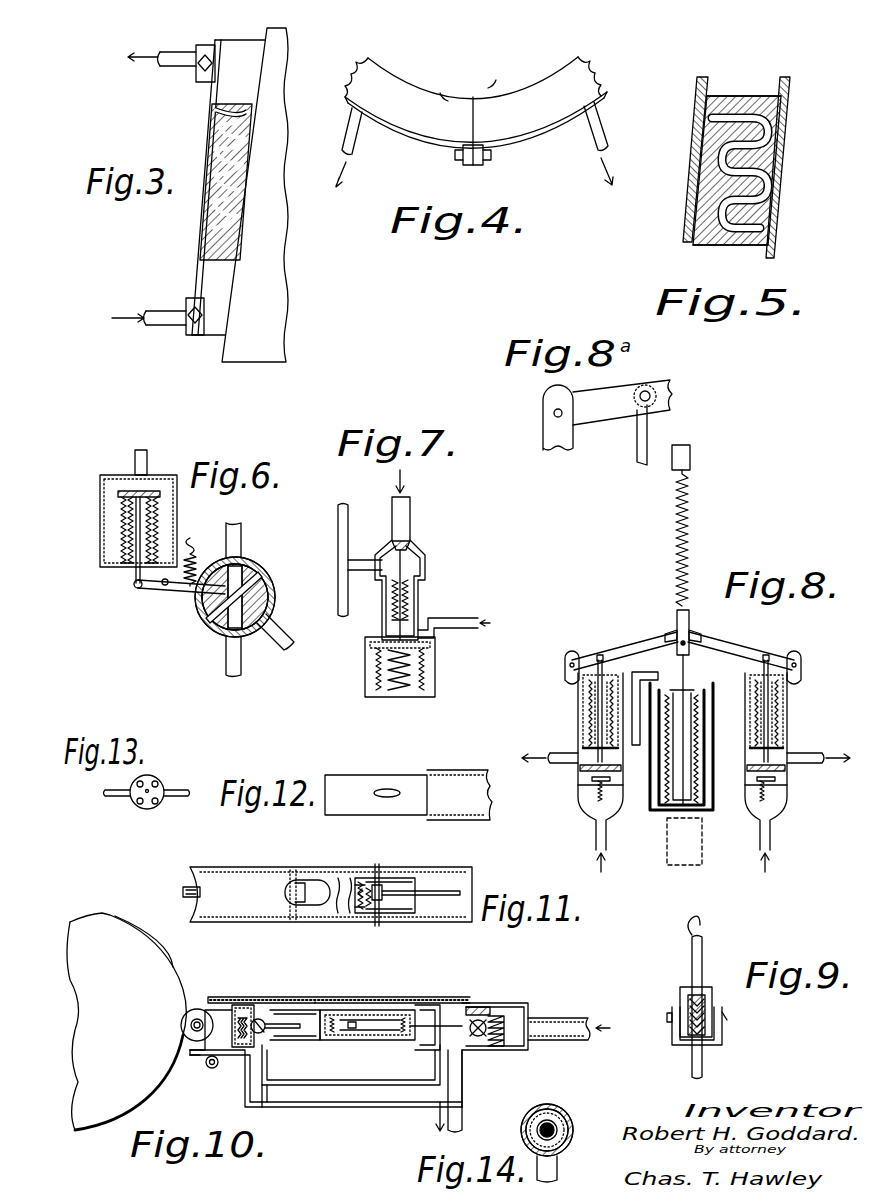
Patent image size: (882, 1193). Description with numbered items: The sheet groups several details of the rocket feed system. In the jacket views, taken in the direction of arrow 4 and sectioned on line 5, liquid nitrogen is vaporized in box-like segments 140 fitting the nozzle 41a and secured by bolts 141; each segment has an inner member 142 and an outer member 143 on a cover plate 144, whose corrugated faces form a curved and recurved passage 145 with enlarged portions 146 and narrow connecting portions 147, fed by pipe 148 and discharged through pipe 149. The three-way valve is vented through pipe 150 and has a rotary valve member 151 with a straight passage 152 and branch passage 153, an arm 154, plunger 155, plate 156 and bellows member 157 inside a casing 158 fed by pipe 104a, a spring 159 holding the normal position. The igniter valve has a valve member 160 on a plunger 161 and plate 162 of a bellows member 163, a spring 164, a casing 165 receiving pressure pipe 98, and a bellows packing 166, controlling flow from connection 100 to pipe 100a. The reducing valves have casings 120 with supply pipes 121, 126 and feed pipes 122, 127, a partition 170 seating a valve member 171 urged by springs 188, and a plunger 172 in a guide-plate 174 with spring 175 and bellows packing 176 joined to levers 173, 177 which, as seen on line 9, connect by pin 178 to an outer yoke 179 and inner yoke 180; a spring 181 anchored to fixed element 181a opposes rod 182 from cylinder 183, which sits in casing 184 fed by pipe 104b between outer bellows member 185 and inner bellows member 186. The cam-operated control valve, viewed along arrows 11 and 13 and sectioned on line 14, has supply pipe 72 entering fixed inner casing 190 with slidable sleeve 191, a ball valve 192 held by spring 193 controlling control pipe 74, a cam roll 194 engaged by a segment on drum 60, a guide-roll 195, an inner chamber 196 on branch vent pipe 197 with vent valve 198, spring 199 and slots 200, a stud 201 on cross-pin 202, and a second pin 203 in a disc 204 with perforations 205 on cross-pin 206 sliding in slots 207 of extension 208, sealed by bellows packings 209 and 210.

In FIG. 3, the arrow 4 is at (224, 5).
In FIG. 4, the section line 5 is at (508, 82).
In FIG. 8, the section line 9 is at (690, 605).
In FIG. 10, the arrow 11 is at (392, 968).
In FIG. 6, the arrow 13 is at (88, 496).
In FIG. 11, the arrow 13 is at (351, 895).
In FIG. 10, the section line 14 is at (480, 993).
In FIG. 3, the nozzle 41a is at (281, 292).
In FIG. 10, the drum 60 is at (126, 1021).
In FIG. 6, the pressure supply pipe 72 is at (244, 532).
In FIG. 10, the pressure supply pipe 72 is at (569, 1016).
In FIG. 10, the control pipe 74 is at (447, 1126).
In FIG. 14, the control pipe 74 is at (558, 1172).
In FIG. 7, the pressure pipe 98 is at (454, 617).
In FIG. 7, the supply pipe or hose connection 100 is at (407, 504).
In FIG. 7, the pipe 100a is at (330, 514).
In FIG. 6, the pipe 104a is at (135, 458).
In FIG. 8, the pressure pipe 104b is at (636, 680).
In FIG. 8, the casing 120 is at (578, 789).
In FIG. 8, the gasoline supply pipe 121 is at (595, 836).
In FIG. 8, the gasoline generator connection 122 is at (550, 748).
In FIG. 8, the oxygen supply pipe 126 is at (772, 836).
In FIG. 8, the oxygen generator feed pipe 127 is at (818, 748).
In FIG. 3, the box-like segments 140 is at (255, 60).
In FIG. 4, the box-like segments 140 is at (445, 95).
In FIG. 4, the bolts 141 is at (461, 155).
In FIG. 3, the inner member 142 is at (236, 212).
In FIG. 5, the inner member 142 is at (765, 224).
In FIG. 3, the outer member 143 is at (208, 220).
In FIG. 5, the outer member 143 is at (697, 210).
In FIG. 3, the cover plate 144 is at (198, 270).
In FIG. 5, the cover plate 144 is at (690, 230).
In FIG. 3, the curved and recurved passage 145 is at (240, 128).
In FIG. 5, the curved and recurved passage 145 is at (775, 165).
In FIG. 3, the enlarged portions 146 is at (214, 125).
In FIG. 5, the enlarged portions 146 is at (712, 172).
In FIG. 3, the narrow connecting portions 147 is at (232, 248).
In FIG. 5, the narrow connecting portions 147 is at (767, 118).
In FIG. 3, the pipe 148 is at (163, 330).
In FIG. 3, the pipe 149 is at (172, 64).
In FIG. 4, the pipe 149 is at (356, 118).
In FIG. 6, the pipe 150 is at (283, 652).
In FIG. 6, the rotary valve member 151 is at (236, 577).
In FIG. 6, the straight passage 152 is at (256, 578).
In FIG. 6, the branch passage 153 is at (208, 620).
In FIG. 6, the arm 154 is at (158, 592).
In FIG. 6, the plunger 155 is at (130, 526).
In FIG. 6, the plate 156 is at (143, 491).
In FIG. 6, the bellows member 157 is at (130, 548).
In FIG. 6, the casing 158 is at (89, 580).
In FIG. 6, the spring 159 is at (202, 551).
In FIG. 7, the valve member 160 is at (395, 546).
In FIG. 7, the plunger 161 is at (404, 564).
In FIG. 7, the plate 162 is at (436, 643).
In FIG. 7, the bellows member 163 is at (428, 668).
In FIG. 7, the spring 164 is at (412, 685).
In FIG. 7, the casing 165 is at (366, 658).
In FIG. 7, the bellows packing 166 is at (392, 598).
In FIG. 8, the partition 170 is at (580, 769).
In FIG. 8, the valve member 171 is at (612, 780).
In FIG. 8A, the plunger 172 is at (637, 437).
In FIG. 8, the plunger 172 is at (602, 672).
In FIG. 8A, the lever 173 is at (672, 388).
In FIG. 8, the lever 173 is at (582, 662).
In FIG. 9, the lever 173 is at (688, 1000).
In FIG. 8, the movable guide-plate 174 is at (620, 757).
In FIG. 8, the spring 175 is at (585, 696).
In FIG. 8, the bellows packing 176 is at (590, 716).
In FIG. 8, the lever 177 is at (750, 660).
In FIG. 9, the lever 177 is at (712, 1000).
In FIG. 8, the pin 178 is at (679, 655).
In FIG. 9, the pin 178 is at (723, 1016).
In FIG. 9, the outer yoke 179 is at (712, 1045).
In FIG. 8, the inner yoke 180 is at (679, 618).
In FIG. 9, the inner yoke 180 is at (692, 965).
In FIG. 8, the spring 181 is at (688, 514).
In FIG. 9, the spring 181 is at (690, 928).
In FIG. 8, the fixed element 181a is at (690, 459).
In FIG. 8, the rod 182 is at (690, 672).
In FIG. 8, the cylinder 183 is at (694, 812).
In FIG. 8, the casing 184 is at (709, 758).
In FIG. 8, the larger outer bellows member 185 is at (700, 728).
In FIG. 8, the smaller inner bellows member 186 is at (706, 692).
In FIG. 8, the springs 188 is at (604, 800).
In FIG. 12, the fixed inner casing 190 is at (474, 772).
In FIG. 10, the fixed inner casing 190 is at (525, 1050).
In FIG. 14, the fixed inner casing 190 is at (528, 1128).
In FIG. 11, the outer casing or sleeve 191 is at (236, 867).
In FIG. 10, the outer casing or sleeve 191 is at (348, 1002).
In FIG. 14, the outer casing or sleeve 191 is at (566, 1115).
In FIG. 10, the ball valve 192 is at (472, 1032).
In FIG. 14, the ball valve 192 is at (558, 1128).
In FIG. 10, the spring 193 is at (518, 1010).
In FIG. 11, the cam roll 194 is at (184, 892).
In FIG. 10, the cam roll 194 is at (182, 1030).
In FIG. 10, the fixed guide-roll 195 is at (212, 1068).
In FIG. 10, the inner chamber 196 is at (237, 1008).
In FIG. 10, the branch vent pipe 197 is at (322, 1107).
In FIG. 10, the ball valve 198 is at (255, 1022).
In FIG. 10, the spring 199 is at (258, 1020).
In FIG. 11, the slots 200 is at (320, 905).
In FIG. 10, the slots 200 is at (286, 1028).
In FIG. 11, the stud 201 is at (278, 896).
In FIG. 10, the stud 201 is at (303, 1025).
In FIG. 11, the cross-pin 202 is at (310, 880).
In FIG. 10, the cross-pin 202 is at (290, 1052).
In FIG. 13, the second pin 203 is at (150, 777).
In FIG. 11, the second pin 203 is at (442, 882).
In FIG. 10, the second pin 203 is at (450, 1008).
In FIG. 13, the disc 204 is at (136, 805).
In FIG. 11, the disc 204 is at (374, 915).
In FIG. 10, the disc 204 is at (375, 1043).
In FIG. 13, the perforations 205 is at (152, 808).
In FIG. 13, the cross-pin 206 is at (106, 792).
In FIG. 12, the cross-pin 206 is at (382, 790).
In FIG. 11, the cross-pin 206 is at (377, 864).
In FIG. 10, the cross-pin 206 is at (358, 1027).
In FIG. 12, the slots 207 is at (395, 790).
In FIG. 11, the slots 207 is at (392, 876).
In FIG. 12, the reduced extension 208 is at (354, 805).
In FIG. 10, the reduced extension 208 is at (418, 1005).
In FIG. 10, the bellows packing 209 is at (338, 1052).
In FIG. 10, the bellows packing 210 is at (405, 1043).